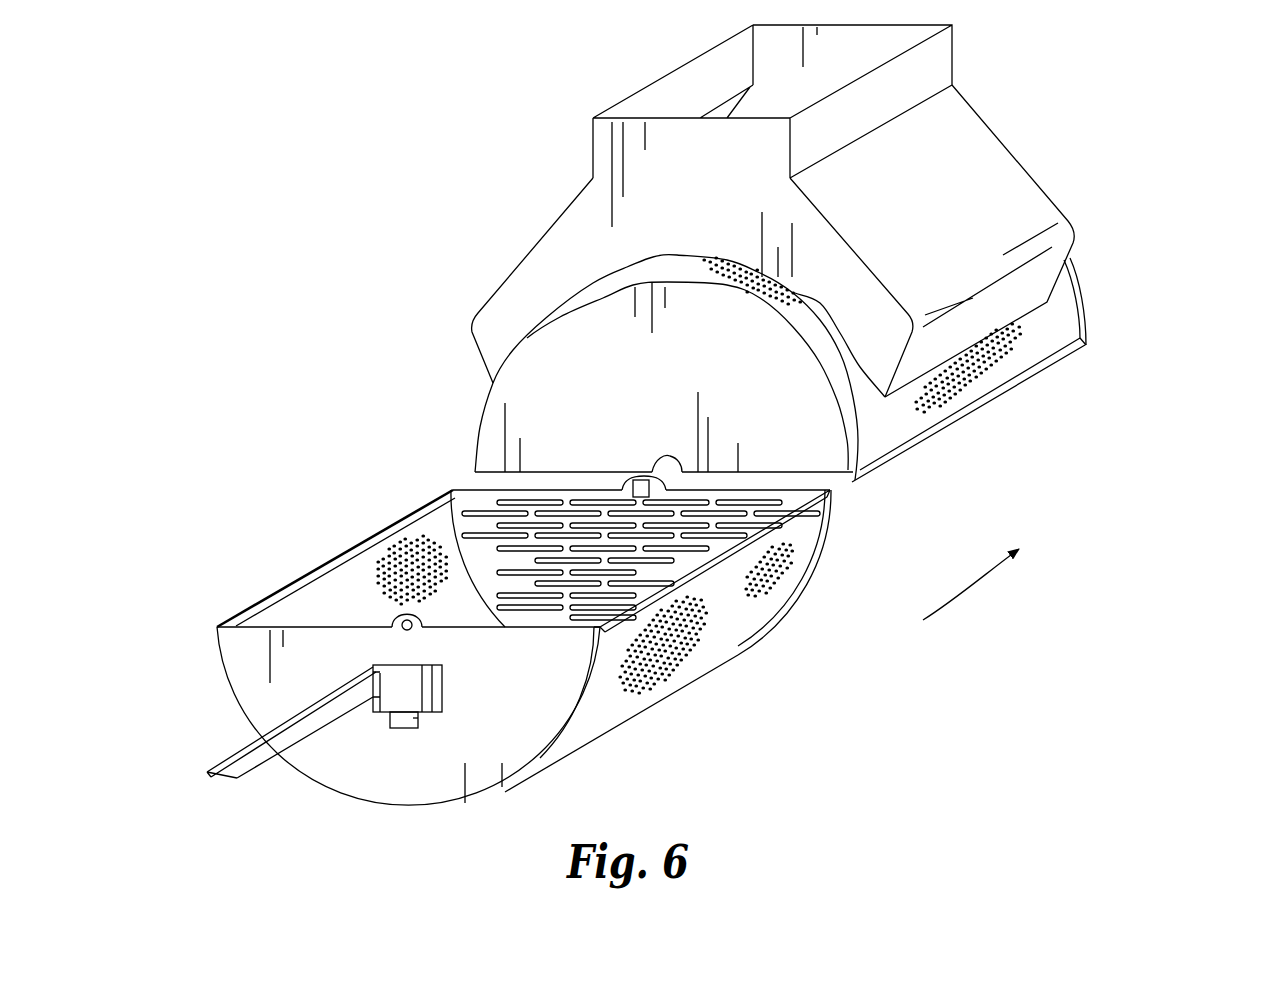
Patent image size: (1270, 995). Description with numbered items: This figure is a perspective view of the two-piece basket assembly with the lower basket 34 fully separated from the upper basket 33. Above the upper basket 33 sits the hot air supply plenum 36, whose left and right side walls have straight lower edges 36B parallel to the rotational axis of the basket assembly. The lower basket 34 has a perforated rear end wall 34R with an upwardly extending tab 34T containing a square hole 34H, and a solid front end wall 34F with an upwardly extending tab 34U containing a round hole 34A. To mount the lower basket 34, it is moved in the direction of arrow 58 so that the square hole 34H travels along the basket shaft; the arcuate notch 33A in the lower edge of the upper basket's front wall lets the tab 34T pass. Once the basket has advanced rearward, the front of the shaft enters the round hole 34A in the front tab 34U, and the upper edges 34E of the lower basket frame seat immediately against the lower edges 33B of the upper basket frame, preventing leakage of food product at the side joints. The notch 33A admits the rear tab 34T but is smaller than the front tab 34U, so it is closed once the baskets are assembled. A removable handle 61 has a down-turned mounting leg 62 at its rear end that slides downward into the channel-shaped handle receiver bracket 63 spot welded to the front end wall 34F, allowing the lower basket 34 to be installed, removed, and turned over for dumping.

The hot air supply plenum 36 is at (1132, 122).
The lower edges of plenum side walls 36B is at (1003, 353).
The upper basket 33 is at (1046, 327).
The arcuate notch 33A is at (657, 450).
The lower edges of upper basket frame 33B is at (1052, 356).
The lower basket 34 is at (532, 602).
The upwardly extending tab 34T is at (570, 518).
The square hole 34H is at (570, 518).
The upper edges of lower basket frame 34E is at (367, 540).
The upwardly extending tab 34U is at (267, 603).
The perforated rear end wall 34R is at (720, 555).
The round hole 34A is at (403, 627).
The front end wall 34F is at (557, 658).
The arrow 58 is at (978, 583).
The removable handle 61 is at (243, 763).
The mounting leg 62 is at (443, 673).
The handle receiver bracket 63 is at (392, 698).